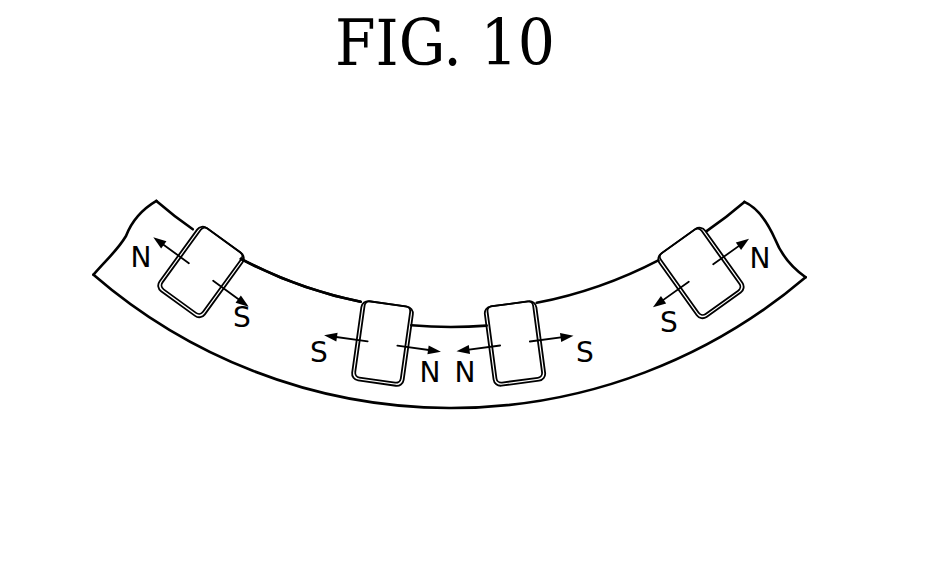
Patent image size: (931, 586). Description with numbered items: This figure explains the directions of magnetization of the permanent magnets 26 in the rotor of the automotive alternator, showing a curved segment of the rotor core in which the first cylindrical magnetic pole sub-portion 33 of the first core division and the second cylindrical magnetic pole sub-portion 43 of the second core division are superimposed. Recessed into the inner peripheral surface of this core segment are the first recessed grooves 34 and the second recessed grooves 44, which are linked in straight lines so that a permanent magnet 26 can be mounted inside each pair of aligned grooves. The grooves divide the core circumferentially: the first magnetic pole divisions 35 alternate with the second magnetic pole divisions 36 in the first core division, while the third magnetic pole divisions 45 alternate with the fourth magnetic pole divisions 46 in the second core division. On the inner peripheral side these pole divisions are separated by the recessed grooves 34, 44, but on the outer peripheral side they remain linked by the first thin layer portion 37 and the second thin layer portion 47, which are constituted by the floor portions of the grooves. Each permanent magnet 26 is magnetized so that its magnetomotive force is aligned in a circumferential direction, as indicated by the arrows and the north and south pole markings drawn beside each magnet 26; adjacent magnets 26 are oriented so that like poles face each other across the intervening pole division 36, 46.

The permanent magnet 26 is at (510, 320).
The first cylindrical magnetic pole sub-portion 33 is at (443, 304).
The second cylindrical magnetic pole sub-portion 43 is at (205, 353).
The first recessed groove 34 is at (533, 331).
The second recessed groove 44 is at (533, 331).
The first magnetic pole division 35 is at (320, 245).
The third magnetic pole division 45 is at (298, 288).
The second magnetic pole division 36 is at (446, 283).
The fourth magnetic pole division 46 is at (445, 333).
The first thin layer portion 37 is at (382, 384).
The second thin layer portion 47 is at (372, 395).